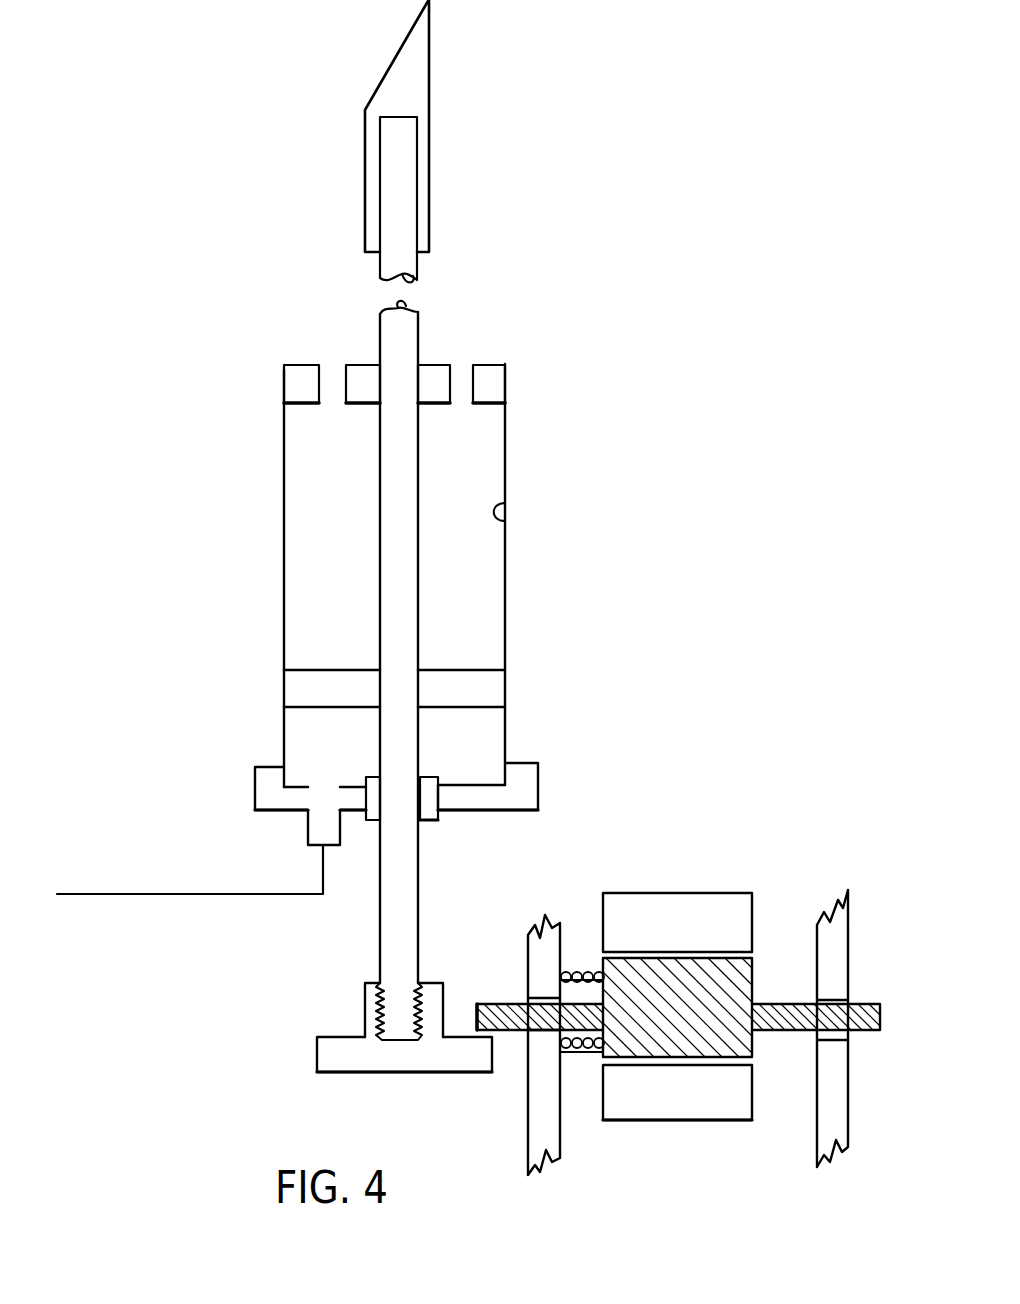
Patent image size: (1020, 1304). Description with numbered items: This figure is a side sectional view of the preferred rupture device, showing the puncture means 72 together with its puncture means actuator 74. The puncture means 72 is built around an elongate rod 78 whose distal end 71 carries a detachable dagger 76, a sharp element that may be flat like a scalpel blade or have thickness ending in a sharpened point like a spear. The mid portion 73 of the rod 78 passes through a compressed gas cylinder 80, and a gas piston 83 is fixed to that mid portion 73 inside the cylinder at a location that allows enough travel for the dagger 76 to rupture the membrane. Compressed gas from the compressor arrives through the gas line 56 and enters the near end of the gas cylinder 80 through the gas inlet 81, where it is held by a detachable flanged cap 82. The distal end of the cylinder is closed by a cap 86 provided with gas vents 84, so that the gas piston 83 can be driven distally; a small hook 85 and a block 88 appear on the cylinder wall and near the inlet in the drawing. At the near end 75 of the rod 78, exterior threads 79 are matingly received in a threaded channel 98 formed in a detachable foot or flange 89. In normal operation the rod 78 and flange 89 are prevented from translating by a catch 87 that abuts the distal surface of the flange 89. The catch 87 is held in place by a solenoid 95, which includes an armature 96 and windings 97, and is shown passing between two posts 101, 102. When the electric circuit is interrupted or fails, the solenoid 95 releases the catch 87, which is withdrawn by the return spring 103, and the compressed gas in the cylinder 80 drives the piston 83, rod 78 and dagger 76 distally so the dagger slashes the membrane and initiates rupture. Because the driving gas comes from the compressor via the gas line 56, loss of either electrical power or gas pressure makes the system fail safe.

The gas line 56 is at (143, 894).
The distal end 71 is at (407, 200).
The puncture means 72 is at (520, 76).
The mid portion 73 is at (398, 582).
The puncture means actuator 74 is at (658, 522).
The near end 75 is at (403, 1010).
The dagger 76 is at (415, 66).
The rod 78 is at (410, 327).
The exterior threads 79 is at (428, 1015).
The compressed gas cylinder 80 is at (488, 453).
The gas inlet 81 is at (322, 820).
The detachable flanged cap 82 is at (528, 780).
The gas piston 83 is at (493, 688).
The gas vents 84 is at (332, 377).
The hook 85 is at (505, 518).
The cap 86 is at (498, 377).
The catch 87 is at (502, 1003).
The block 88 is at (427, 820).
The flange 89 is at (423, 1057).
The solenoid 95 is at (706, 874).
The armature 96 is at (738, 982).
The windings 97 is at (690, 932).
The threaded channel 98 is at (415, 993).
The post 101 is at (540, 1153).
The post 102 is at (832, 1147).
The return spring 103 is at (575, 975).